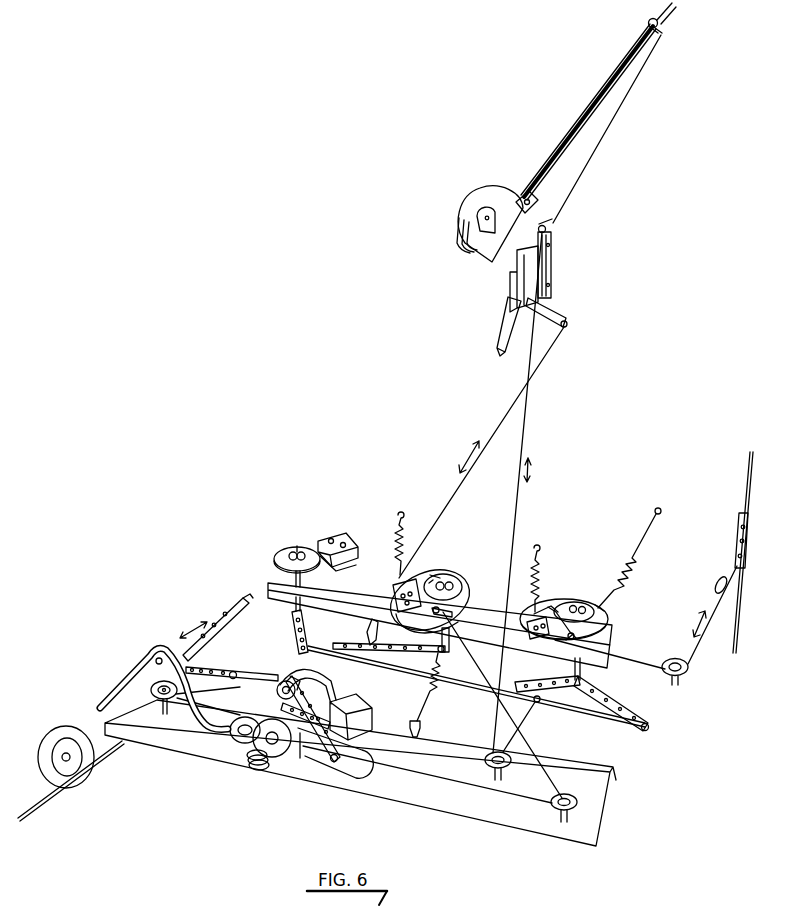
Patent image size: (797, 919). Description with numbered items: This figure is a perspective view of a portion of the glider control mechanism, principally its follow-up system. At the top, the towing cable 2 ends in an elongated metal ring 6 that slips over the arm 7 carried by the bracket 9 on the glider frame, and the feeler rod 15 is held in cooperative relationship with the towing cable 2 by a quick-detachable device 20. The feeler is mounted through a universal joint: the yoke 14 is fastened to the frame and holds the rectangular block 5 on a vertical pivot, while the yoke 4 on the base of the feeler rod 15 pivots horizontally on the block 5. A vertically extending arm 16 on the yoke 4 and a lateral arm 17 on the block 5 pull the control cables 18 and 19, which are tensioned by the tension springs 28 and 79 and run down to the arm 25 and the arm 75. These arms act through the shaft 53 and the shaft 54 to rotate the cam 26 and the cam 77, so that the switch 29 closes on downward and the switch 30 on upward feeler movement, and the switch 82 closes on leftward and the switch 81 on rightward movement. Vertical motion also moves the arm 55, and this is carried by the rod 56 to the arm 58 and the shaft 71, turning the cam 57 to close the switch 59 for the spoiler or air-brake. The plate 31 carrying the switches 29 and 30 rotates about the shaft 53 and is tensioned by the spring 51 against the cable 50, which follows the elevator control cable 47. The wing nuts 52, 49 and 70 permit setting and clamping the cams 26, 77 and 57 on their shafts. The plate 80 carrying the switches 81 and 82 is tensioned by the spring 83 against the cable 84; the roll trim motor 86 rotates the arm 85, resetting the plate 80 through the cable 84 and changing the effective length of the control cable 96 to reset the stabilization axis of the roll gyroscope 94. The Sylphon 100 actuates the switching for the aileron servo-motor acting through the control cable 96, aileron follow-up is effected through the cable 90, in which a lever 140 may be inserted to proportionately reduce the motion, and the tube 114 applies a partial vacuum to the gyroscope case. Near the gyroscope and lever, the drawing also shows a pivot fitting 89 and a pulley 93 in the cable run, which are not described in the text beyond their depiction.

The towing cable 2 is at (588, 112).
The yoke 4 is at (551, 258).
The rectangular block 5 is at (514, 287).
The elongated metal ring 6 is at (526, 213).
The arm 7 is at (488, 196).
The bracket 9 is at (458, 232).
The yoke 14 is at (500, 316).
The feeler rod 15 is at (579, 193).
The vertically extending arm 16 is at (551, 220).
The arm 17 is at (553, 317).
The control cable 18 is at (519, 508).
The control cable 19 is at (448, 514).
The quick-detachable device 20 is at (648, 21).
The arm 25 is at (536, 677).
The cam 26 is at (607, 618).
The tension spring 28 is at (631, 576).
The switch 29 is at (566, 603).
The switch 30 is at (581, 628).
The plate 31 is at (541, 604).
The elevator control cable 47 is at (738, 613).
The wing nut 49 is at (464, 575).
The cable 50 is at (634, 665).
The spring 51 is at (542, 576).
The wing nut 52 is at (575, 633).
The shaft 53 is at (583, 671).
The shaft 54 is at (438, 641).
The arm 55 is at (612, 701).
The rod 56 is at (398, 676).
The cam 57 is at (284, 546).
The arm 58 is at (345, 642).
The switch 59 is at (360, 531).
The wing nut 70 is at (299, 546).
The shaft 71 is at (295, 606).
The arm 75 is at (366, 635).
The cam 77 is at (467, 592).
The tension spring 79 is at (431, 690).
The plate 80 is at (405, 617).
The switch 81 is at (433, 574).
The switch 82 is at (454, 613).
The spring 83 is at (402, 542).
The cable 84 is at (489, 665).
The arm 85 is at (317, 752).
The roll trim motor 86 is at (372, 711).
The pivot 89 is at (287, 680).
The cable 90 is at (232, 692).
The pulley 93 is at (238, 740).
The roll gyroscope 94 is at (319, 691).
The control cable 96 is at (103, 762).
The Sylphon 100 is at (259, 770).
The tube 114 is at (135, 671).
The lever 140 is at (212, 670).